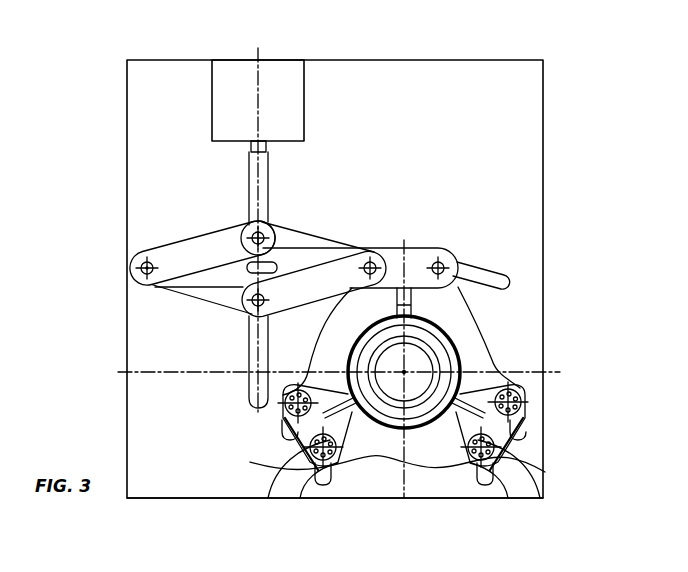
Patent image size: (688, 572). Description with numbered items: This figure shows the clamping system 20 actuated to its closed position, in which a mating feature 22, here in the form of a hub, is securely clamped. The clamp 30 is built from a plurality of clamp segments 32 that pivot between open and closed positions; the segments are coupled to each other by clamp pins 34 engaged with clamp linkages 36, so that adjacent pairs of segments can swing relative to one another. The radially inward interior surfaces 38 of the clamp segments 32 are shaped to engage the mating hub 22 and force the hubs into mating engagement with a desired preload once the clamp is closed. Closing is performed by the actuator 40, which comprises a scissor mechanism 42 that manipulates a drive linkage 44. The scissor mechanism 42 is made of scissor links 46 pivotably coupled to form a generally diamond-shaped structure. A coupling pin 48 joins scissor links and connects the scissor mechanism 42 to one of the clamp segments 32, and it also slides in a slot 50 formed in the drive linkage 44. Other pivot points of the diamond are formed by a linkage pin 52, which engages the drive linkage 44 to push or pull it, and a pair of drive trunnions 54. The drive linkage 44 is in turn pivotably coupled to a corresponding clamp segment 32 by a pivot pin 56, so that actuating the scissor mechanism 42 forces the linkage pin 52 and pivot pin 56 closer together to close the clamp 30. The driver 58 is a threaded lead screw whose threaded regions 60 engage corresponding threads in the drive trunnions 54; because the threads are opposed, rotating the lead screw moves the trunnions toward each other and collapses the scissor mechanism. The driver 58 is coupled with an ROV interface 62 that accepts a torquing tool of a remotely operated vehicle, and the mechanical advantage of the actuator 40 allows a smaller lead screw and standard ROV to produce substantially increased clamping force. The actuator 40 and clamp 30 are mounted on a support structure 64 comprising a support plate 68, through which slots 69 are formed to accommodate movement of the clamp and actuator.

The clamping system 20 is at (557, 70).
The mating feature 22 is at (381, 426).
The clamp 30 is at (511, 355).
The clamp segments 32 is at (478, 345).
The clamp pins 34 is at (273, 415).
The clamp linkages 36 is at (516, 438).
The interior surfaces 38 is at (460, 372).
The actuator 40 is at (306, 251).
The scissor mechanism 42 is at (124, 268).
The drive linkage 44 is at (421, 243).
The scissor links 46 is at (228, 245).
The coupling pin 48 is at (404, 236).
The slot 50 is at (326, 236).
The linkage pin 52 is at (143, 262).
The drive trunnions 54 is at (266, 232).
The pivot pin 56 is at (456, 258).
The driver 58 is at (245, 152).
The threaded regions 60 is at (248, 205).
The ROV interface 62 is at (308, 115).
The support structure 64 is at (152, 57).
The support plate 68 is at (335, 284).
The slots 69 is at (494, 272).